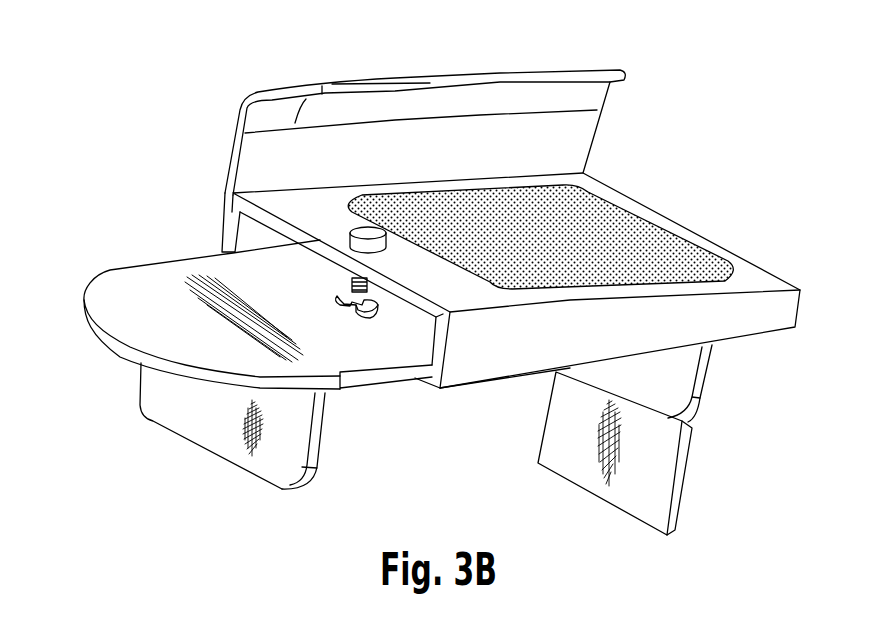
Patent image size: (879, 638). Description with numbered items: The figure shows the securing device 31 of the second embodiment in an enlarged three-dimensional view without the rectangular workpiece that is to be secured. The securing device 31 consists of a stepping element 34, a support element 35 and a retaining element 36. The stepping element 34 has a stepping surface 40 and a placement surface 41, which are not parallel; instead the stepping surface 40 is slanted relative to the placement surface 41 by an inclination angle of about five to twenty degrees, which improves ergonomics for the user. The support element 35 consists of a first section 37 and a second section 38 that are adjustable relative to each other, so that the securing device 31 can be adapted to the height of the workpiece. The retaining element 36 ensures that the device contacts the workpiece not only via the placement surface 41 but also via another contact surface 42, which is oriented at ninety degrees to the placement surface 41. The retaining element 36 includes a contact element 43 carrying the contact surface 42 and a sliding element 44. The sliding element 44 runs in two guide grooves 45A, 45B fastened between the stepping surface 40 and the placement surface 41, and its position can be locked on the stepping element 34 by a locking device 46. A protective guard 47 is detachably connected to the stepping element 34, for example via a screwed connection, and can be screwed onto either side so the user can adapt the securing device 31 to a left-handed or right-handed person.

The securing device 31 is at (150, 158).
The stepping element 34 is at (737, 315).
The support element 35 is at (697, 483).
The retaining element 36 is at (123, 402).
The first section 37 is at (667, 393).
The second section 38 is at (633, 498).
The stepping surface 40 is at (630, 238).
The placement surface 41 is at (473, 404).
The contact surface 42 is at (320, 432).
The contact element 43 is at (267, 462).
The sliding element 44 is at (135, 293).
The guide groove 45A is at (220, 248).
The guide groove 45B is at (428, 358).
The locking device 46 is at (367, 229).
The protective guard 47 is at (565, 100).